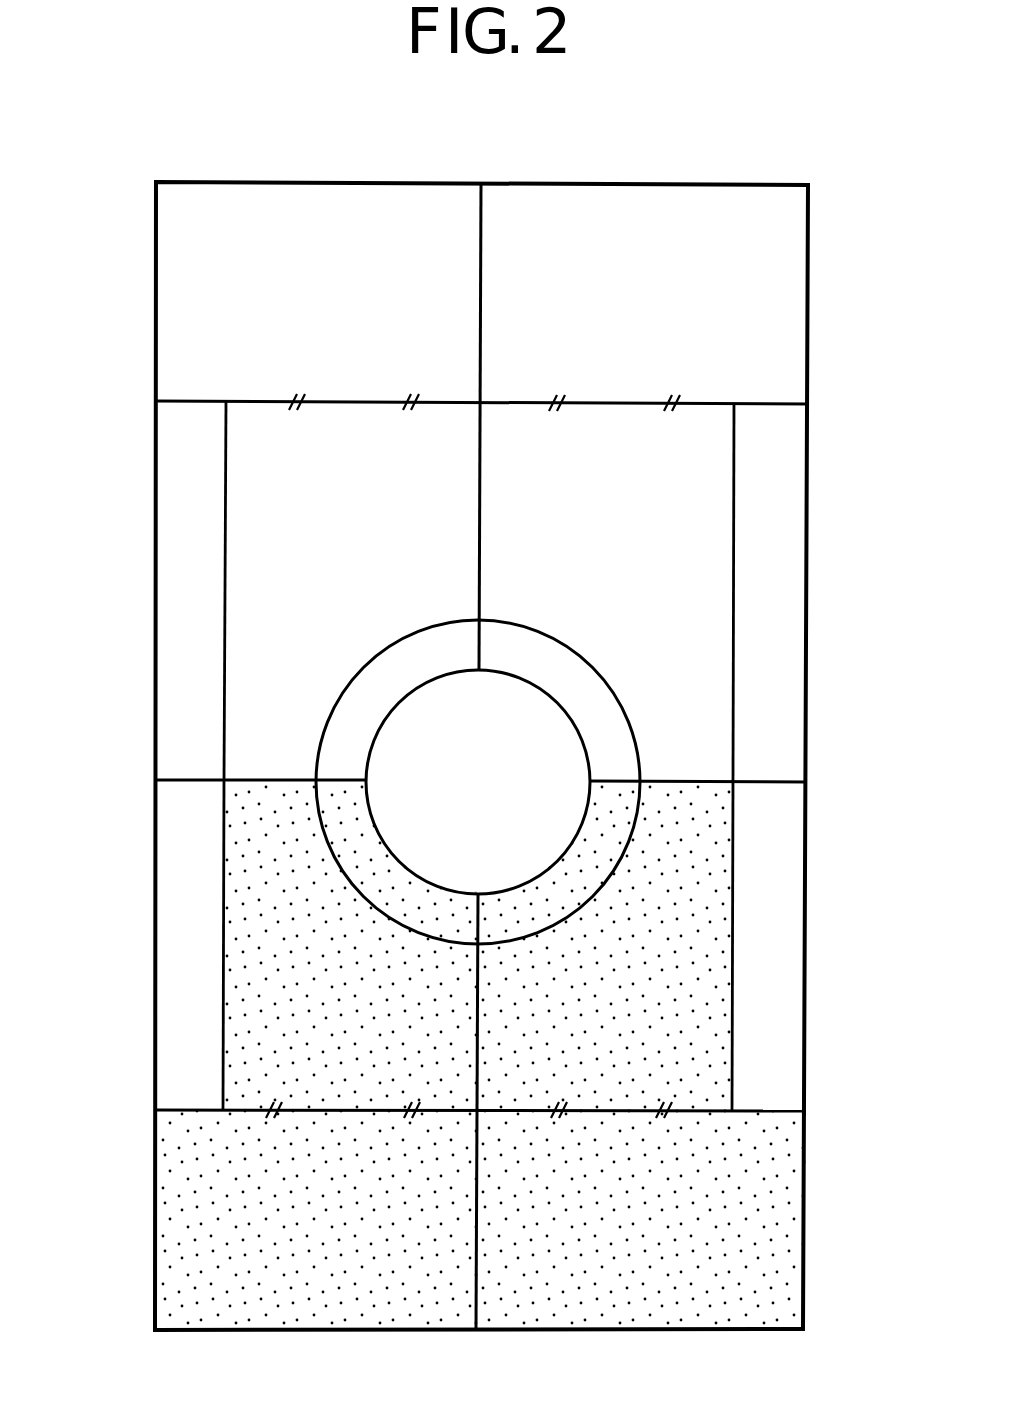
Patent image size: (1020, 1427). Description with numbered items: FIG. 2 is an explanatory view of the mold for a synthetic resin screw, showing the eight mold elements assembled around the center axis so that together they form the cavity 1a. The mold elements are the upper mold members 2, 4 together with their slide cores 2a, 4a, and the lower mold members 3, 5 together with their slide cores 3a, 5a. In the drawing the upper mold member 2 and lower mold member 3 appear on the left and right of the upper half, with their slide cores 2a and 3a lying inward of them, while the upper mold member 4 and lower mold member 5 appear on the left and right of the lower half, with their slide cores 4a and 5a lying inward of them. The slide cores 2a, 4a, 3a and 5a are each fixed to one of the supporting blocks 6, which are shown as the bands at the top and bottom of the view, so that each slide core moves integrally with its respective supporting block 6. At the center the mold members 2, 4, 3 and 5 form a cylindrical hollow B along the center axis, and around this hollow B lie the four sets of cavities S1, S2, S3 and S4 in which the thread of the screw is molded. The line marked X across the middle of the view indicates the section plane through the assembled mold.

The supporting block 6 is at (265, 202).
The upper mold member 2 is at (188, 447).
The slide core 2a is at (268, 506).
The lower mold member 3 is at (782, 443).
The slide core 3a is at (707, 518).
The upper mold member 4 is at (180, 963).
The slide core 4a is at (280, 1045).
The lower mold member 5 is at (780, 993).
The slide core 5a is at (687, 1062).
The cavity S1 is at (448, 636).
The cavity S2 is at (542, 647).
The cavity S3 is at (345, 862).
The cavity S4 is at (603, 856).
The cylindrical hollow B is at (429, 713).
The cavity 1a is at (400, 765).
The section line X- X is at (152, 832).